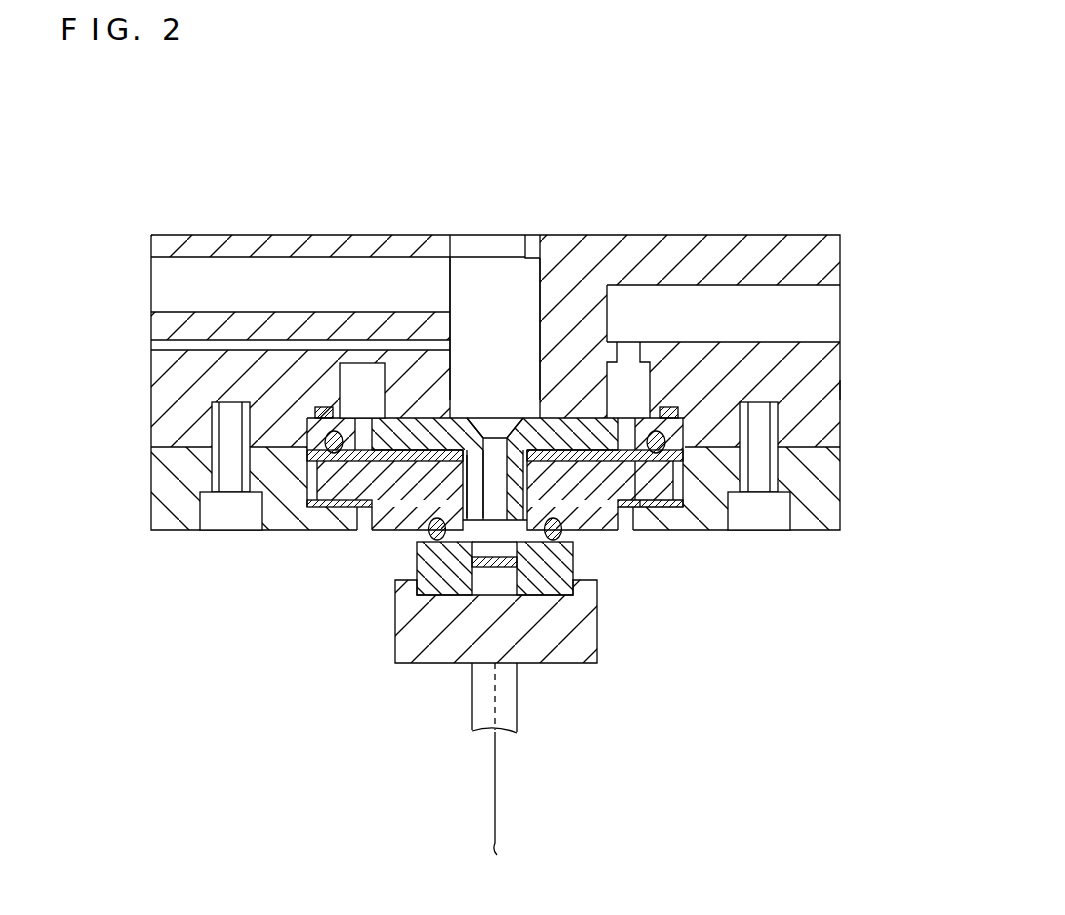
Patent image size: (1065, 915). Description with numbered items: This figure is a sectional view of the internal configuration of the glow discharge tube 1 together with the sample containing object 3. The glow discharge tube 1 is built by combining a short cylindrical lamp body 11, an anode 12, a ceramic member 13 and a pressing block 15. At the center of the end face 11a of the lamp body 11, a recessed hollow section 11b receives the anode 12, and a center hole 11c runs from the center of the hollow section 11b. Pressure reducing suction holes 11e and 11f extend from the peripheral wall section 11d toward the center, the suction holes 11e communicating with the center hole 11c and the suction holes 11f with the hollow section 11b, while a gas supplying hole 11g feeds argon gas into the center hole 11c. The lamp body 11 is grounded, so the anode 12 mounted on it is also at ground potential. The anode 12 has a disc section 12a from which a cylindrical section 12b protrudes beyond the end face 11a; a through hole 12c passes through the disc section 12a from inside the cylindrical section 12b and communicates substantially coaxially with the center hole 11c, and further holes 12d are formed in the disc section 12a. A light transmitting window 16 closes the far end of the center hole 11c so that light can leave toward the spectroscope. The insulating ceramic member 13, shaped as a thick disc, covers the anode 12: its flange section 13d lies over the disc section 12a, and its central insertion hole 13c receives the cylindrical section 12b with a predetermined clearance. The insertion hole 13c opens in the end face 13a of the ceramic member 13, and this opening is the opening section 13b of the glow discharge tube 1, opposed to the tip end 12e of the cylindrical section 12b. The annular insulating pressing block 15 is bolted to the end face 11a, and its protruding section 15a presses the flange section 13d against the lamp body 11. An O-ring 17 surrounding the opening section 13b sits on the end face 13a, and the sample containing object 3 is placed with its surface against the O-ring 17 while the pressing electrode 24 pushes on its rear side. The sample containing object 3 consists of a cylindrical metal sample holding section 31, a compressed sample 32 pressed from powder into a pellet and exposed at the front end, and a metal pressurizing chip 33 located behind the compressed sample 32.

The glow discharge tube 1 is at (852, 382).
The sample containing object 3 is at (557, 667).
The lamp body 11 is at (842, 245).
The end face 11a is at (827, 450).
The hollow section 11b is at (683, 497).
The center hole 11c is at (535, 290).
The peripheral wall section 11d is at (157, 405).
The pressure reducing suction hole 11e is at (162, 261).
The pressure reducing suction hole 11f is at (797, 287).
The gas supplying hole 11g is at (162, 346).
The anode 12 is at (405, 428).
The disc section 12a is at (502, 445).
The cylindrical section 12b is at (436, 430).
The through hole 12c is at (481, 425).
The holes 12d is at (628, 427).
The tip end 12e is at (470, 530).
The ceramic member 13 is at (342, 522).
The end face 13a is at (655, 480).
The opening section 13b is at (382, 522).
The insertion hole 13c is at (400, 530).
The flange section 13d is at (636, 492).
The pressing block 15 is at (183, 524).
The protruding section 15a is at (342, 522).
The light transmitting window 16 is at (518, 245).
The O-ring 17 is at (607, 530).
The pressing electrode 24 is at (483, 645).
The sample holding section 31 is at (565, 572).
The compressed sample 32 is at (510, 552).
The pressurizing chip 33 is at (470, 552).